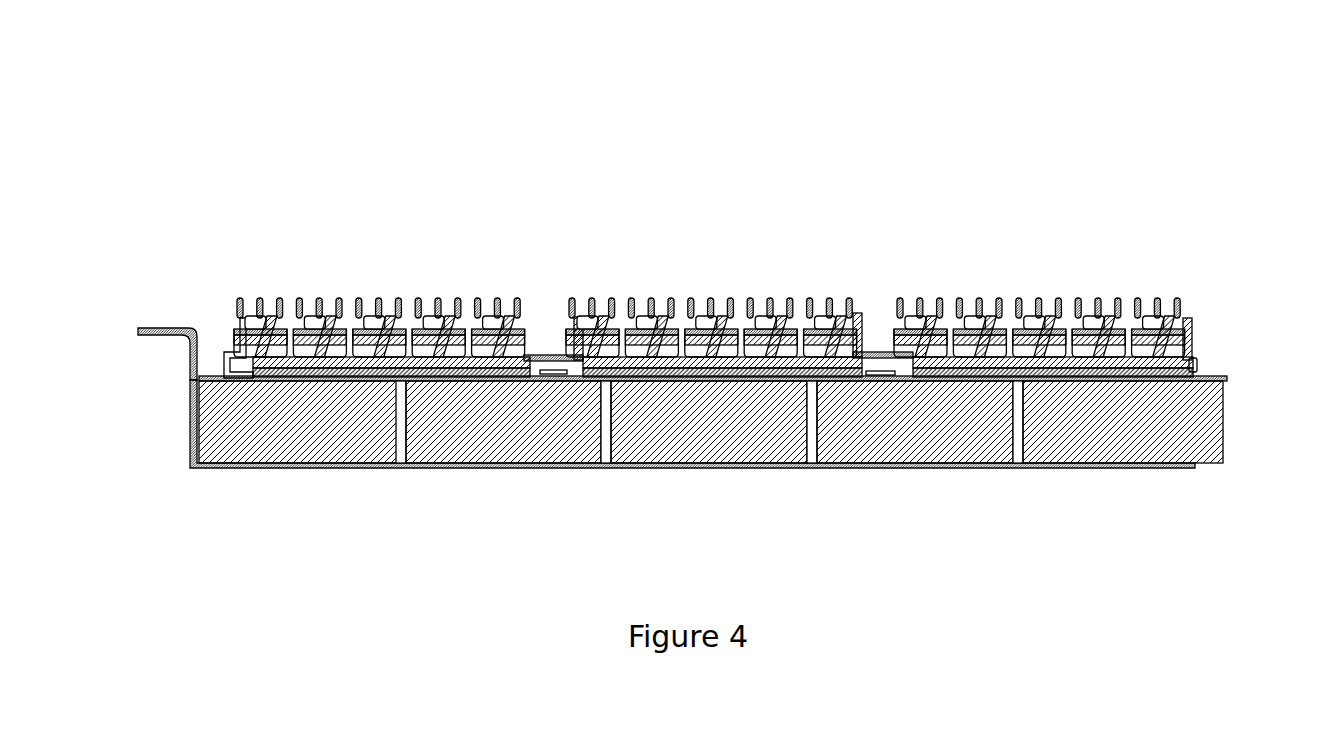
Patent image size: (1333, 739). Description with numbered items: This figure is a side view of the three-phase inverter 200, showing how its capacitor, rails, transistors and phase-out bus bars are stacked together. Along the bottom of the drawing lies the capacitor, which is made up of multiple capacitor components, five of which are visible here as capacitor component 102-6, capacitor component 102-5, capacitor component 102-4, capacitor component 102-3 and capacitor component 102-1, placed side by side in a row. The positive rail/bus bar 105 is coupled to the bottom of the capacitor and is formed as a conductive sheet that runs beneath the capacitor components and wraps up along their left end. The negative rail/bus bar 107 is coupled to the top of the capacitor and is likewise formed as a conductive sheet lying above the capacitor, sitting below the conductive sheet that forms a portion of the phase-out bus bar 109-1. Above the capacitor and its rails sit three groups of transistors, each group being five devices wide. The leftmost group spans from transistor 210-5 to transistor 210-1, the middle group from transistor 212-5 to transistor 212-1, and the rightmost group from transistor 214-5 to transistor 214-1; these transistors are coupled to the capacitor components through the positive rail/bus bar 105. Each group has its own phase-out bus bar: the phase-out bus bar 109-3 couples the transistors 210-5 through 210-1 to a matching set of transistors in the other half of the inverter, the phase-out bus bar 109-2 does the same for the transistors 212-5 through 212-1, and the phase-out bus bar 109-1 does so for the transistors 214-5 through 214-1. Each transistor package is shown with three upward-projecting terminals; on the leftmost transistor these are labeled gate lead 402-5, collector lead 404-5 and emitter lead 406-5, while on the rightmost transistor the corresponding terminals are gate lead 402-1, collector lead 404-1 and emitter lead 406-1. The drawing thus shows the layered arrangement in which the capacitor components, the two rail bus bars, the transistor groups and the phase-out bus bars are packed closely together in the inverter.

The three-phase inverter 200 is at (1104, 65).
The negative rail 107 is at (140, 327).
The positive rail 105 is at (187, 443).
The capacitor component 102-6 is at (343, 458).
The capacitor component 102-5 is at (576, 455).
The capacitor component 102-4 is at (790, 452).
The capacitor component 102-3 is at (1000, 452).
The capacitor component 102-1 is at (1213, 447).
The phase-out bus bar 109-3 is at (545, 355).
The phase-out bus bar 109-2 is at (853, 320).
The phase-out bus bar 109-1 is at (1192, 322).
The transistor 210-5 is at (324, 247).
The transistor 210-1 is at (512, 316).
The transistor 212-5 is at (600, 316).
The transistor 212-1 is at (840, 320).
The transistor 214-5 is at (896, 322).
The transistor 214-1 is at (1140, 287).
The gate lead 402-5 is at (260, 300).
The collector lead 404-5 is at (263, 248).
The emitter lead 406-5 is at (287, 273).
The gate lead 402-1 is at (1137, 300).
The collector lead 404-1 is at (1157, 300).
The emitter lead 406-1 is at (1177, 300).